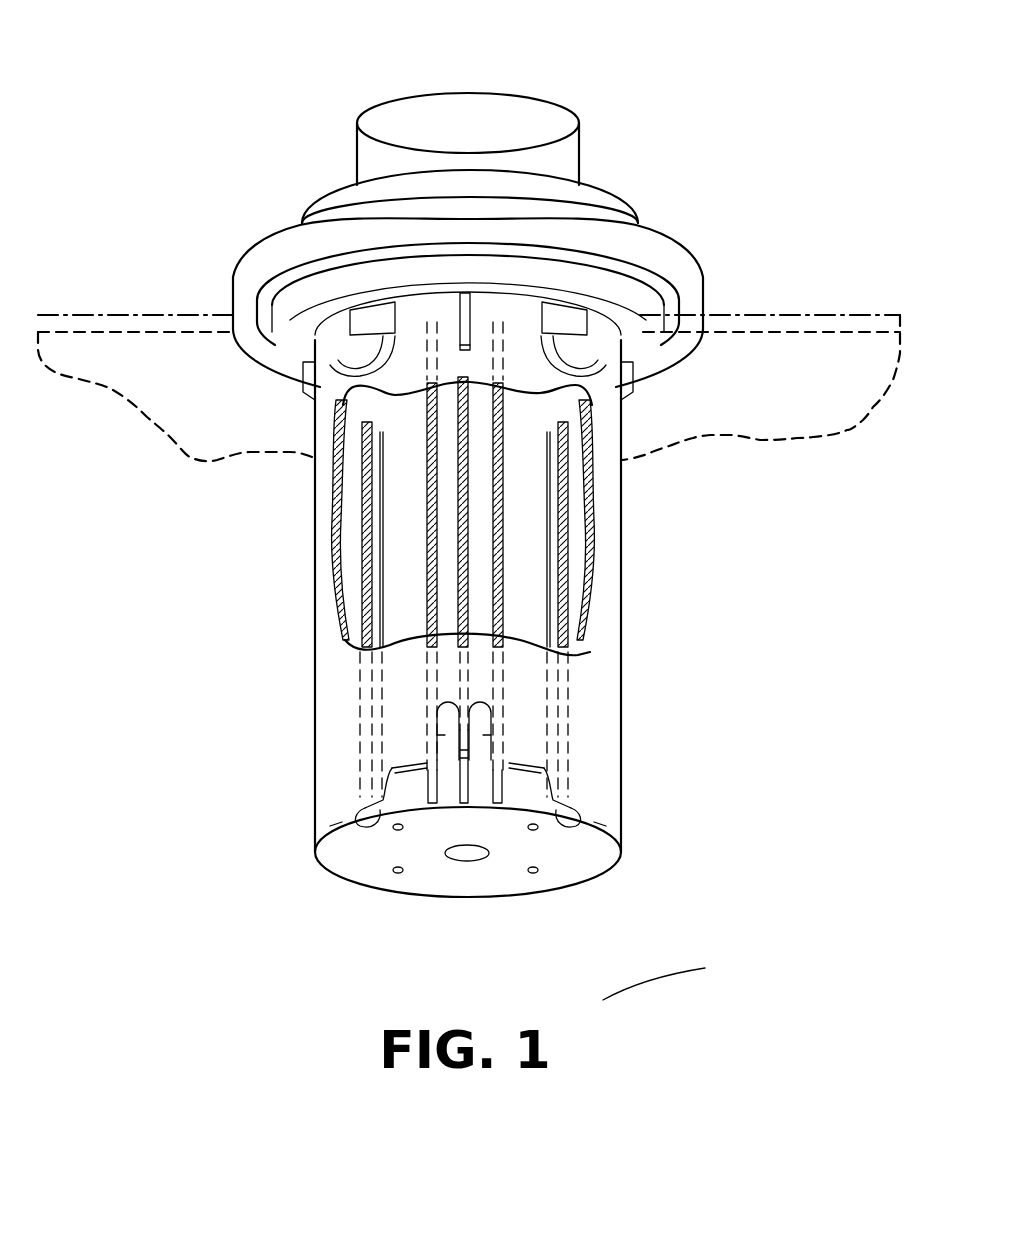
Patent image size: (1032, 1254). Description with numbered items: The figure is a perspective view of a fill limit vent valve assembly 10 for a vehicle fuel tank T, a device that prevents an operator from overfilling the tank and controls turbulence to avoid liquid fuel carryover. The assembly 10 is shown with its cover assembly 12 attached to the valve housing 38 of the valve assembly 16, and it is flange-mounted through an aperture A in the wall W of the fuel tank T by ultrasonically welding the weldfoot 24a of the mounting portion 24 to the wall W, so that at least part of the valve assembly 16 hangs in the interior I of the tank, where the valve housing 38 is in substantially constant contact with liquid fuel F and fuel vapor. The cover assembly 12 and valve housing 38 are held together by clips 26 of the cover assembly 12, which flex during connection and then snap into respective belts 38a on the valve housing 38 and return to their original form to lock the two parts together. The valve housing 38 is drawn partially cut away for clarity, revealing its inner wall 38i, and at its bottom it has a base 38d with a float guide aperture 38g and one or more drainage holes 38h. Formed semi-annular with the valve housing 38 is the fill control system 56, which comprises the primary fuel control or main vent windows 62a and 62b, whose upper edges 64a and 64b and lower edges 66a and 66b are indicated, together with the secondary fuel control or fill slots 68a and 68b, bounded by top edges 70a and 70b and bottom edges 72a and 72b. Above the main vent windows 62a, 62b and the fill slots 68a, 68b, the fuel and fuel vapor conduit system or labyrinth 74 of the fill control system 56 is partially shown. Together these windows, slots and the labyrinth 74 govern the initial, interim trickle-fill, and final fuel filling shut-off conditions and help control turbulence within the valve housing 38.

The fill limit vent valve assembly 10 is at (556, 50).
The cover assembly 12 is at (652, 110).
The valve assembly 16 is at (240, 474).
The fuel tank T is at (206, 312).
The wall W is at (818, 352).
The aperture A is at (692, 306).
The interior I is at (862, 550).
The liquid fuel F is at (654, 1000).
The mounting portion 24 is at (668, 225).
The weldfoot 24a is at (665, 258).
The clips 26 is at (303, 378).
The valve housing 38 is at (622, 492).
The belts 38a is at (298, 344).
The base 38d is at (617, 867).
The float guide aperture 38g is at (467, 862).
The drainage holes 38h is at (537, 870).
The inner wall 38i is at (340, 563).
The fill control system 56 is at (449, 825).
The main vent window 62a is at (522, 792).
The main vent window 62b is at (410, 787).
The upper edge 64a is at (540, 777).
The upper edge 64b is at (410, 786).
The lower edge 66a is at (560, 807).
The lower edge 66b is at (372, 805).
The fill slot 68a is at (483, 737).
The fill slot 68b is at (447, 735).
The top edge 70a is at (547, 733).
The top edge 70b is at (432, 720).
The bottom edge 72a is at (481, 815).
The bottom edge 72b is at (355, 812).
The fuel/fuel vapor conduit system 74 is at (556, 584).